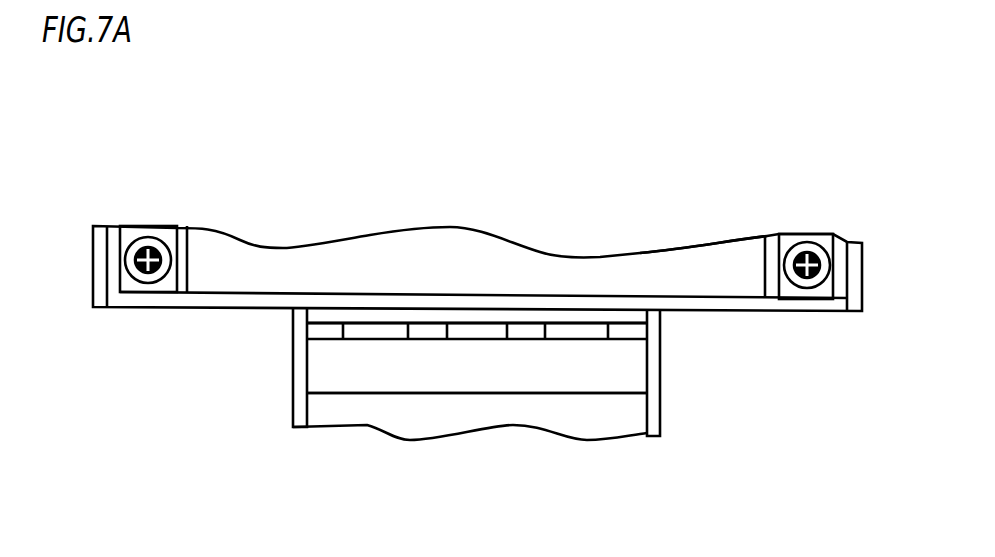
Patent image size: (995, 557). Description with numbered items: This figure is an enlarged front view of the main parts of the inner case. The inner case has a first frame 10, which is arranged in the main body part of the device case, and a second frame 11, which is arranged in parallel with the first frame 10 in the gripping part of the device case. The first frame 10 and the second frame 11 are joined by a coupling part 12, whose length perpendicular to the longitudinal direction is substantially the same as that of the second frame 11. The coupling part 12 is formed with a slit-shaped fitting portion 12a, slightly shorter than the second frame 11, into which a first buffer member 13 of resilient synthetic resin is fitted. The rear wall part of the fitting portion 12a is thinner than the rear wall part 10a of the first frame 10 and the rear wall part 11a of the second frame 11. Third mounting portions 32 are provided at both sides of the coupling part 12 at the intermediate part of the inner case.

The first frame 10 is at (601, 244).
The rear wall part of the first frame 10a is at (722, 275).
The second frame 11 is at (440, 426).
The rear wall part of the second frame 11a is at (350, 373).
The coupling part 12 is at (520, 352).
The fitting portion 12a is at (587, 318).
The first buffer member 13 is at (418, 316).
The third mounting portions 32 is at (290, 308).